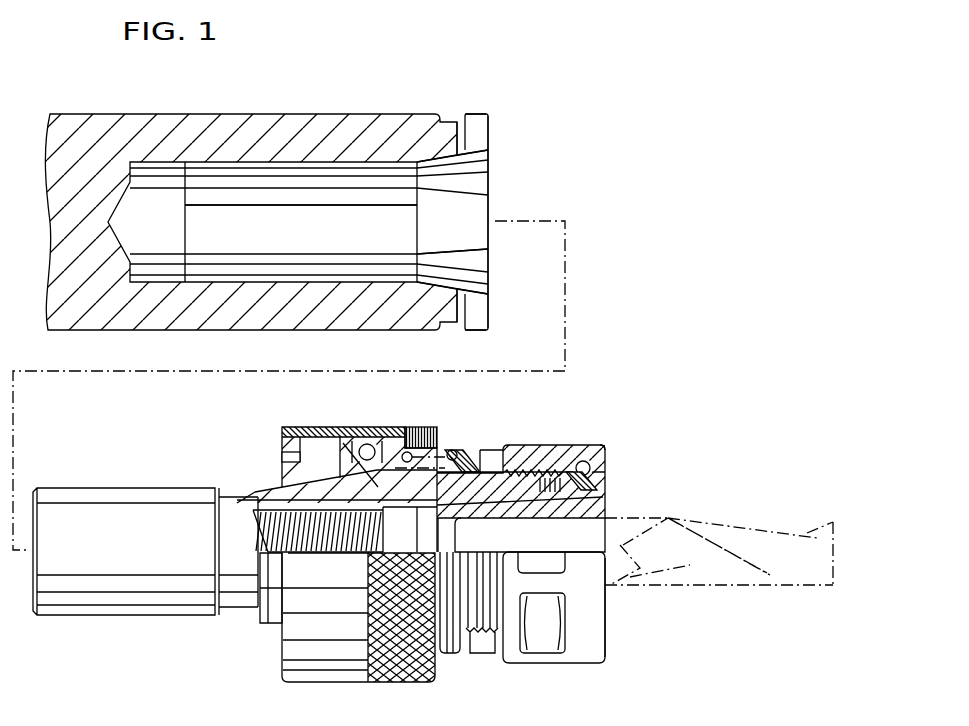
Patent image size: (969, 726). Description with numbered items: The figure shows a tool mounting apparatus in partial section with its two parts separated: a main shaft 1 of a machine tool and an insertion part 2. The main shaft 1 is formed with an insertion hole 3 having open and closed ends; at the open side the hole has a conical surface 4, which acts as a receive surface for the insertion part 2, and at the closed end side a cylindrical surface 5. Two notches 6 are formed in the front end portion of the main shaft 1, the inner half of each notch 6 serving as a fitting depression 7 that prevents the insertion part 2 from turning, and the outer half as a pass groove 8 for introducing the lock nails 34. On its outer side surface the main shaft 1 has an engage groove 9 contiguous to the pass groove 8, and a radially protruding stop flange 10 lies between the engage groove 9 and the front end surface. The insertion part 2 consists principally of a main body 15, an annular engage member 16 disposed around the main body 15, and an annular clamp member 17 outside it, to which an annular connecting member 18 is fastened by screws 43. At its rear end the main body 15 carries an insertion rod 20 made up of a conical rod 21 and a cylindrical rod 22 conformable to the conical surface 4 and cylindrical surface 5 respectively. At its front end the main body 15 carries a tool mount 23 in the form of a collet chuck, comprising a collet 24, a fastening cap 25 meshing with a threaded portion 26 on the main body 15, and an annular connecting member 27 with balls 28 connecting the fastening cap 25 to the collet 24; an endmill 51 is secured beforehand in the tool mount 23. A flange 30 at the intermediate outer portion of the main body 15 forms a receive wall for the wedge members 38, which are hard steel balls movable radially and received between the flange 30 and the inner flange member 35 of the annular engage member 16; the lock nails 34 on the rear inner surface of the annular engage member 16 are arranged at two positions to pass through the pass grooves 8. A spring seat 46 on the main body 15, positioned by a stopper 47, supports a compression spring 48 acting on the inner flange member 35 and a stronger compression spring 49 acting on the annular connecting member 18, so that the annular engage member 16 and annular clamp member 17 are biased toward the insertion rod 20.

The main shaft 1 is at (243, 122).
The insertion part 2 is at (541, 663).
The insertion hole 3 is at (453, 193).
The conical surface 4 is at (462, 234).
The cylindrical surface 5 is at (362, 248).
The notch 6 is at (491, 138).
The fitting depression 7 is at (477, 161).
The pass groove 8 is at (481, 127).
The engage groove 9 is at (455, 122).
The stop flange 10 is at (475, 120).
The main body 15 is at (305, 427).
The annular engage member 16 is at (330, 426).
The annular clamp member 17 is at (393, 428).
The annular connecting member 18 is at (480, 447).
The insertion rod 20 is at (172, 616).
The conical rod 21 is at (272, 590).
The cylindrical rod 22 is at (88, 607).
The tool mount 23 is at (606, 658).
The collet 24 is at (595, 510).
The fastening cap 25 is at (547, 453).
The threaded portion 26 is at (541, 432).
The annular connecting member 27 is at (592, 468).
The balls 28 is at (603, 446).
The flange 30 is at (305, 437).
The lock nails 34 is at (288, 452).
The inner flange member 35 is at (385, 443).
The wedge members 38 is at (367, 443).
The screws 43 is at (421, 430).
The spring seat 46 is at (492, 440).
The stopper 47 is at (470, 457).
The compression spring 48 is at (458, 632).
The compression spring 49 is at (452, 455).
The endmill 51 is at (670, 518).